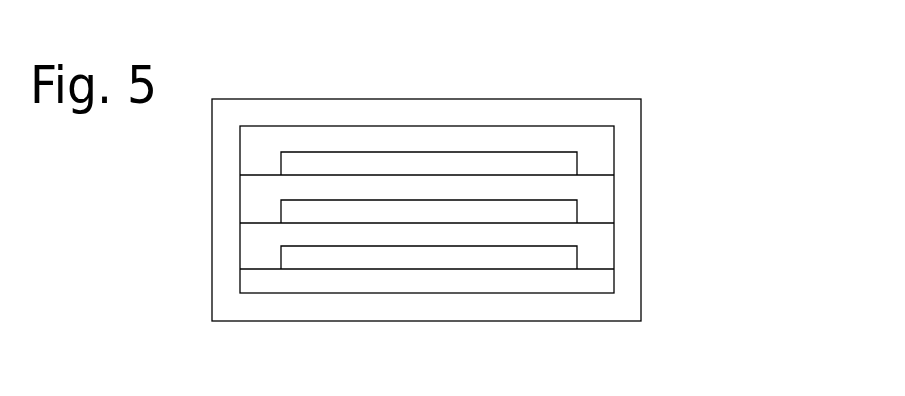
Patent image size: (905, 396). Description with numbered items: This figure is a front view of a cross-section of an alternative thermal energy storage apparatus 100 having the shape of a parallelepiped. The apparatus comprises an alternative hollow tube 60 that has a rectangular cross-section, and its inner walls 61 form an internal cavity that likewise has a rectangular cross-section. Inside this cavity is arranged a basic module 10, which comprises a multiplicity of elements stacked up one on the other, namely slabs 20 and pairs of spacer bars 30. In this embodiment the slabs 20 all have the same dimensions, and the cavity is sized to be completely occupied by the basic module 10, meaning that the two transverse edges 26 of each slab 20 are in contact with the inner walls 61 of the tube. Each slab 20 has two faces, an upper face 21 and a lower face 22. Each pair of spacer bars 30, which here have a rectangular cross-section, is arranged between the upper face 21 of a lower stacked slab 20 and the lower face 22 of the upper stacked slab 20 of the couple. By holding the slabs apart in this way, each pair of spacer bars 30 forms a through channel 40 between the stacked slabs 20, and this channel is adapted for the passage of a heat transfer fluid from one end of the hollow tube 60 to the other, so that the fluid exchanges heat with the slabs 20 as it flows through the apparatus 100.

The thermal energy storage apparatus 100 is at (467, 187).
The basic module 10 is at (251, 131).
The slab 20 is at (467, 187).
The upper face 21 is at (396, 178).
The lower face 22 is at (318, 247).
The transverse edge 26 is at (240, 191).
The spacer bar 30 is at (258, 161).
The through channel 40 is at (350, 162).
The hollow tube 60 is at (608, 108).
The inner wall 61 is at (320, 290).